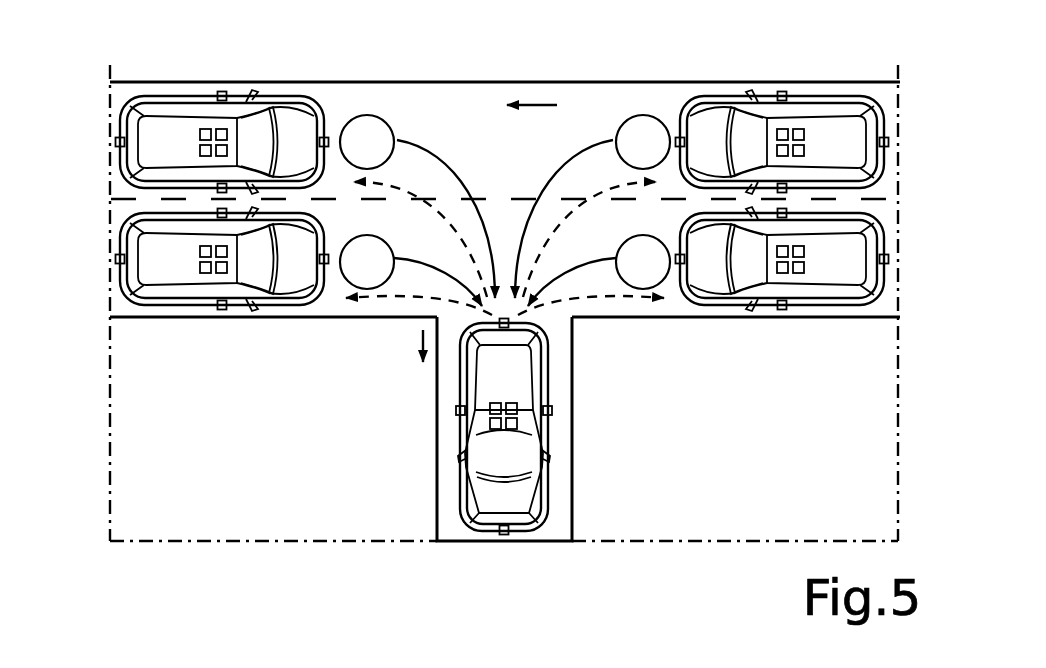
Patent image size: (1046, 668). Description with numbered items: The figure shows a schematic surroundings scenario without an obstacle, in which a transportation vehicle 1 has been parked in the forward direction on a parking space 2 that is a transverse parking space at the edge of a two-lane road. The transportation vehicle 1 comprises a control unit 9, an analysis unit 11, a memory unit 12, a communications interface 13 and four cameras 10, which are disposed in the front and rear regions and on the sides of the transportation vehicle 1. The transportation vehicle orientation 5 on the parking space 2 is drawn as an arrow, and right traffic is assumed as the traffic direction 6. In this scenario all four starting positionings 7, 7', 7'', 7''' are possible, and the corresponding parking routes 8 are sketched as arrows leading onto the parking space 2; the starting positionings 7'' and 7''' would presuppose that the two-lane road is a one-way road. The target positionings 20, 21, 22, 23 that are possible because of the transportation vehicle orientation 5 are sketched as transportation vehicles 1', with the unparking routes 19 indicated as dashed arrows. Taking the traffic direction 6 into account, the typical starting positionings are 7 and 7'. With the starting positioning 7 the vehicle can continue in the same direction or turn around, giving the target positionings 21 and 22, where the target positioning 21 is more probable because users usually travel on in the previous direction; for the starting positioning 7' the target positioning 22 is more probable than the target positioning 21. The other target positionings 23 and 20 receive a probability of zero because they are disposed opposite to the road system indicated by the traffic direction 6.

The transportation vehicle 1 is at (523, 461).
The transportation vehicle in target positioning 1' is at (79, 139).
The parking space 2 is at (460, 533).
The transportation vehicle orientation 5 is at (422, 340).
The traffic direction 6 is at (541, 104).
The starting positioning 7 is at (367, 262).
The starting positioning 7' is at (643, 142).
The starting positioning 7'' is at (367, 142).
The starting positioning 7''' is at (643, 262).
The parking route 8 is at (433, 152).
The control unit 9 is at (490, 426).
The camera 10 is at (504, 316).
The analysis unit 11 is at (518, 426).
The memory unit 12 is at (460, 455).
The communications interface 13 is at (548, 455).
The unparking route 19 is at (432, 204).
The target positioning 20 is at (826, 275).
The target positioning 21 is at (184, 278).
The target positioning 22 is at (828, 130).
The target positioning 23 is at (170, 130).